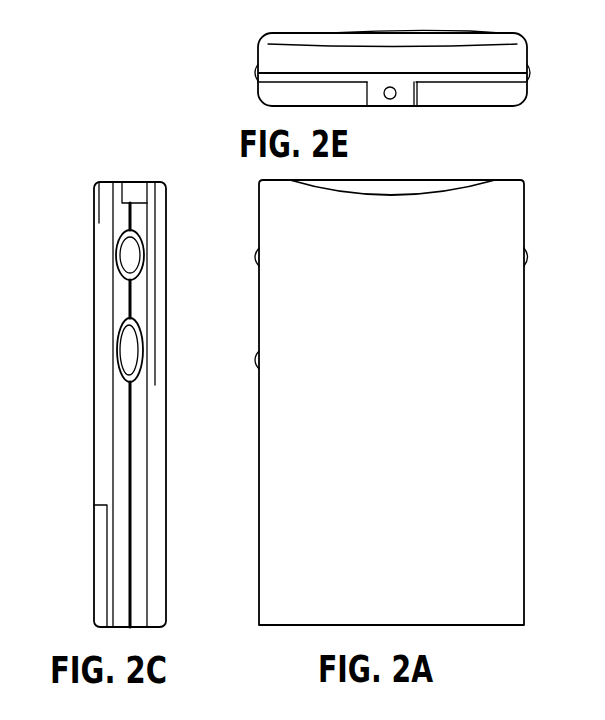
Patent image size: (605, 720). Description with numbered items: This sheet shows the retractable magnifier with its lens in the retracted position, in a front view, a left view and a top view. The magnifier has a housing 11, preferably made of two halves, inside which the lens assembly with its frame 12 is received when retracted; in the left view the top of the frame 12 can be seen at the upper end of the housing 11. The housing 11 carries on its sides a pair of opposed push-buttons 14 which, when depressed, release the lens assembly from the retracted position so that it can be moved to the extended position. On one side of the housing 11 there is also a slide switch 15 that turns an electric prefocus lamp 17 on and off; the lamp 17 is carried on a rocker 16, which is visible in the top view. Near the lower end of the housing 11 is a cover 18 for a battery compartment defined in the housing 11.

In FIG. 2E, the housing 11 is at (392, 68).
In FIG. 2A, the housing 11 is at (240, 508).
In FIG. 2C, the housing 11 is at (153, 505).
In FIG. 2C, the frame 12 is at (135, 194).
In FIG. 2A, the push-buttons 14 is at (241, 256).
In FIG. 2C, the push-buttons 14 is at (131, 256).
In FIG. 2A, the slide switch 15 is at (257, 360).
In FIG. 2C, the slide switch 15 is at (128, 360).
In FIG. 2E, the rocker 16 is at (407, 97).
In FIG. 2E, the electric prefocus lamp 17 is at (387, 100).
In FIG. 2C, the cover 18 is at (100, 585).